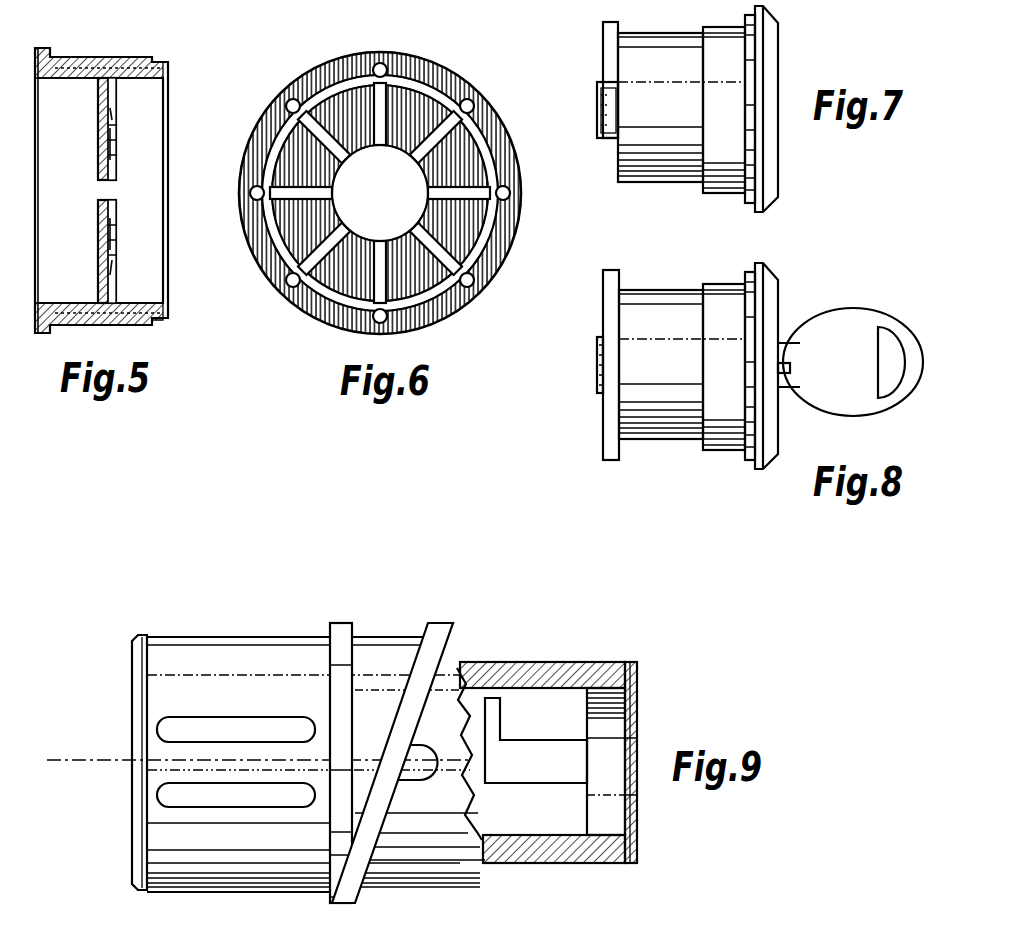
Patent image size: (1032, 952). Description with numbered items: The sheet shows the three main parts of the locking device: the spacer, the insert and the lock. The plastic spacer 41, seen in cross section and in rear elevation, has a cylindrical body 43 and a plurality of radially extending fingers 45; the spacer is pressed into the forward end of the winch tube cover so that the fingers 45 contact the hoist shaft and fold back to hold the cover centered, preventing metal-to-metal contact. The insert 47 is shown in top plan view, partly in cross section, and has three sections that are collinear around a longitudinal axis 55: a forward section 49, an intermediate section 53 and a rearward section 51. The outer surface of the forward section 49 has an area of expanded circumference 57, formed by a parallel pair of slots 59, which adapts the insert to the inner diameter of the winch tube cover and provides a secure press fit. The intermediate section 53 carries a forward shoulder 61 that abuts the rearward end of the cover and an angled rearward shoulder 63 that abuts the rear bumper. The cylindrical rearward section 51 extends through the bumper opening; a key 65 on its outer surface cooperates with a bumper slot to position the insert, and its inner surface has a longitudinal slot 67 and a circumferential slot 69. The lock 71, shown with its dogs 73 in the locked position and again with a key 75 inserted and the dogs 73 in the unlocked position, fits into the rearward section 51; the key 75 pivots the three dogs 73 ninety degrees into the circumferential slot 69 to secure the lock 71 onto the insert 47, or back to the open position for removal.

In FIG. 5, the spacer 41 is at (76, 57).
In FIG. 6, the spacer 41 is at (414, 98).
In FIG. 5, the cylindrical body 43 is at (116, 60).
In FIG. 6, the cylindrical body 43 is at (346, 68).
In FIG. 5, the fingers 45 is at (114, 110).
In FIG. 6, the fingers 45 is at (443, 168).
In FIG. 9, the insert 47 is at (126, 905).
In FIG. 9, the forward section 49 is at (275, 642).
In FIG. 9, the rearward section 51 is at (588, 660).
In FIG. 9, the intermediate section 53 is at (397, 648).
In FIG. 9, the longitudinal axis 55 is at (103, 758).
In FIG. 9, the area of expanded circumference 57 is at (178, 768).
In FIG. 9, the slots 59 is at (207, 725).
In FIG. 9, the forward shoulder 61 is at (342, 622).
In FIG. 9, the rearward shoulder 63 is at (450, 642).
In FIG. 9, the key 65 is at (418, 782).
In FIG. 9, the longitudinal slot 67 is at (543, 765).
In FIG. 9, the circumferential slot 69 is at (498, 714).
In FIG. 7, the lock 71 is at (670, 192).
In FIG. 8, the lock 71 is at (670, 448).
In FIG. 7, the dogs 73 is at (603, 42).
In FIG. 8, the dogs 73 is at (603, 303).
In FIG. 8, the key 75 is at (849, 309).